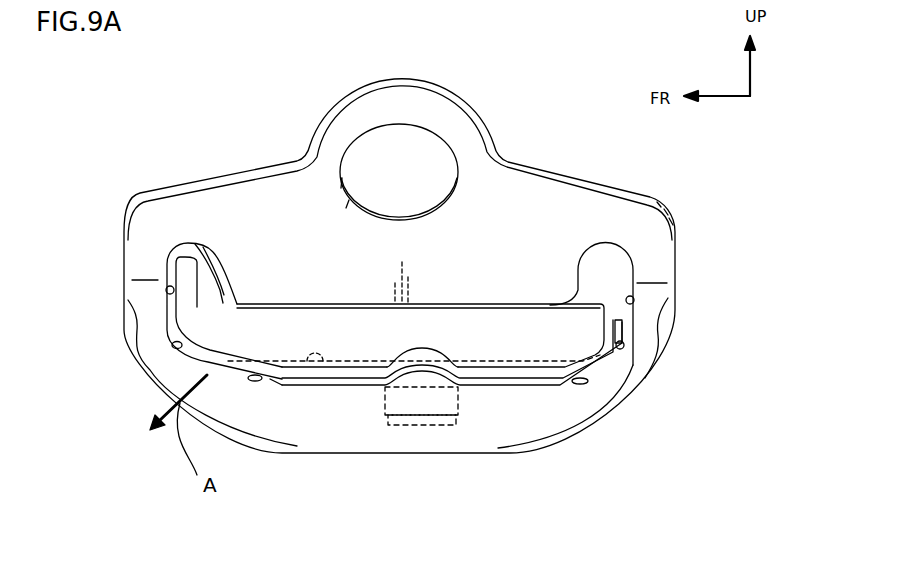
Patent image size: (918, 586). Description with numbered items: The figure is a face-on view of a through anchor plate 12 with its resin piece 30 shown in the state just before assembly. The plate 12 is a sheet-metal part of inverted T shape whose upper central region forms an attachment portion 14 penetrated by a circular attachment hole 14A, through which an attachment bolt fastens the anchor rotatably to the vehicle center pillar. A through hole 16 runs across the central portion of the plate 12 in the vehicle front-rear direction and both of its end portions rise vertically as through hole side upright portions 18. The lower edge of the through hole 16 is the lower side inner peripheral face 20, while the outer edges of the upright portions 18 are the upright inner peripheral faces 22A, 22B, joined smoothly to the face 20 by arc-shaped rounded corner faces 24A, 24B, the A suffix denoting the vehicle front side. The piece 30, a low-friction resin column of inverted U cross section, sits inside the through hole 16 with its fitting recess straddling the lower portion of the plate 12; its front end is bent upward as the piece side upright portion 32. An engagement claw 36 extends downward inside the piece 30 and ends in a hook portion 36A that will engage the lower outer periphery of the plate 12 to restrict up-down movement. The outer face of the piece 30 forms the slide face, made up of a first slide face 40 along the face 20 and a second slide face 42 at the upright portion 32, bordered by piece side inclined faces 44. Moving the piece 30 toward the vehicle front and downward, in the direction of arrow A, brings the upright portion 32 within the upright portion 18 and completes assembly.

The plate 12 is at (497, 132).
The attachment portion 14 is at (372, 108).
The attachment hole 14A is at (420, 126).
The through hole 16 is at (340, 327).
The through hole side upright portion 18 is at (210, 255).
The lower side inner peripheral face 20 is at (322, 362).
The upright inner peripheral face 22A is at (166, 290).
The upright inner peripheral face 22B is at (634, 300).
The rounded corner face 24A is at (172, 347).
The rounded corner face 24B is at (623, 348).
The piece 30 is at (513, 307).
The piece side upright portion 32 is at (190, 298).
The engagement claw 36 is at (423, 393).
The hook portion 36A is at (447, 427).
The first slide face 40 is at (480, 327).
The second slide face 42 is at (192, 273).
The piece side inclined face 44 is at (208, 242).